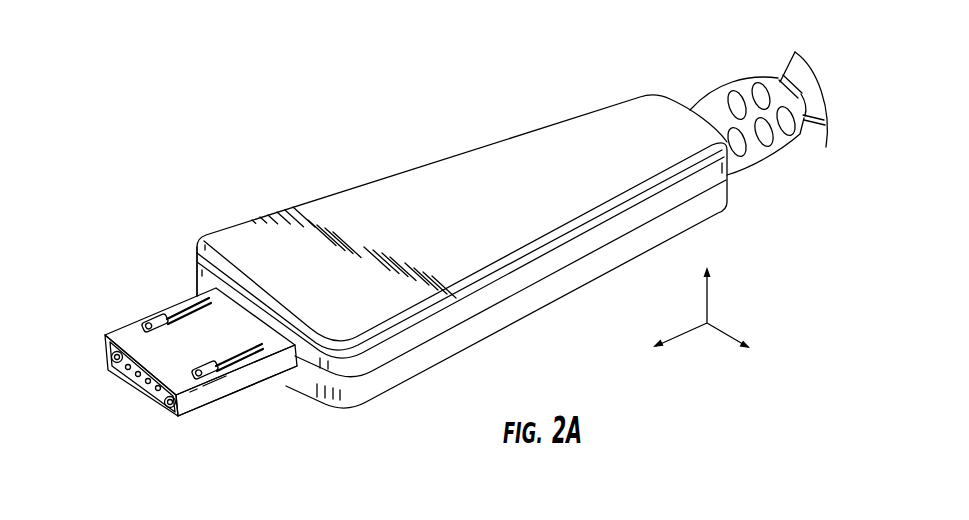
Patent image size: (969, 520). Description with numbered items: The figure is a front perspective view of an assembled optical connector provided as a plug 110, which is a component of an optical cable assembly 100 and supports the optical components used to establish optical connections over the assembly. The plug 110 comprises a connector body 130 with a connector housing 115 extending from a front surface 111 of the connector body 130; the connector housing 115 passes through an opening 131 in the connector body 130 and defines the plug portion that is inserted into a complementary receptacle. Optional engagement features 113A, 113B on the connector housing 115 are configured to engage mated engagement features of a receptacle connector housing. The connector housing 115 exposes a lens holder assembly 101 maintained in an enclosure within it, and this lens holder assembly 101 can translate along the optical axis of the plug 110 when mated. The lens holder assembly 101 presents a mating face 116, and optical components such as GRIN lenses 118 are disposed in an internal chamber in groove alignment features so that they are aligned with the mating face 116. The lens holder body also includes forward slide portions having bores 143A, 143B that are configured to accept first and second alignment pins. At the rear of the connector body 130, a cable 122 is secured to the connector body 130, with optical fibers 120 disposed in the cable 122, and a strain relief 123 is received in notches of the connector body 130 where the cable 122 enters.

The optical cable assembly 100 is at (163, 101).
The plug 110 is at (136, 201).
The front surface 111 is at (197, 253).
The connector body 130 is at (411, 162).
The connector housing 115 is at (125, 332).
The lens holder assembly 101 is at (113, 382).
The mating face 116 is at (160, 412).
The GRIN lenses 118 is at (157, 390).
The bore 143A is at (113, 360).
The bore 143B is at (177, 417).
The engagement feature 113A is at (157, 320).
The engagement feature 113B is at (213, 377).
The opening 131 is at (287, 378).
The optical fibers 120 is at (702, 102).
The strain relief 123 is at (758, 158).
The cable 122 is at (790, 82).